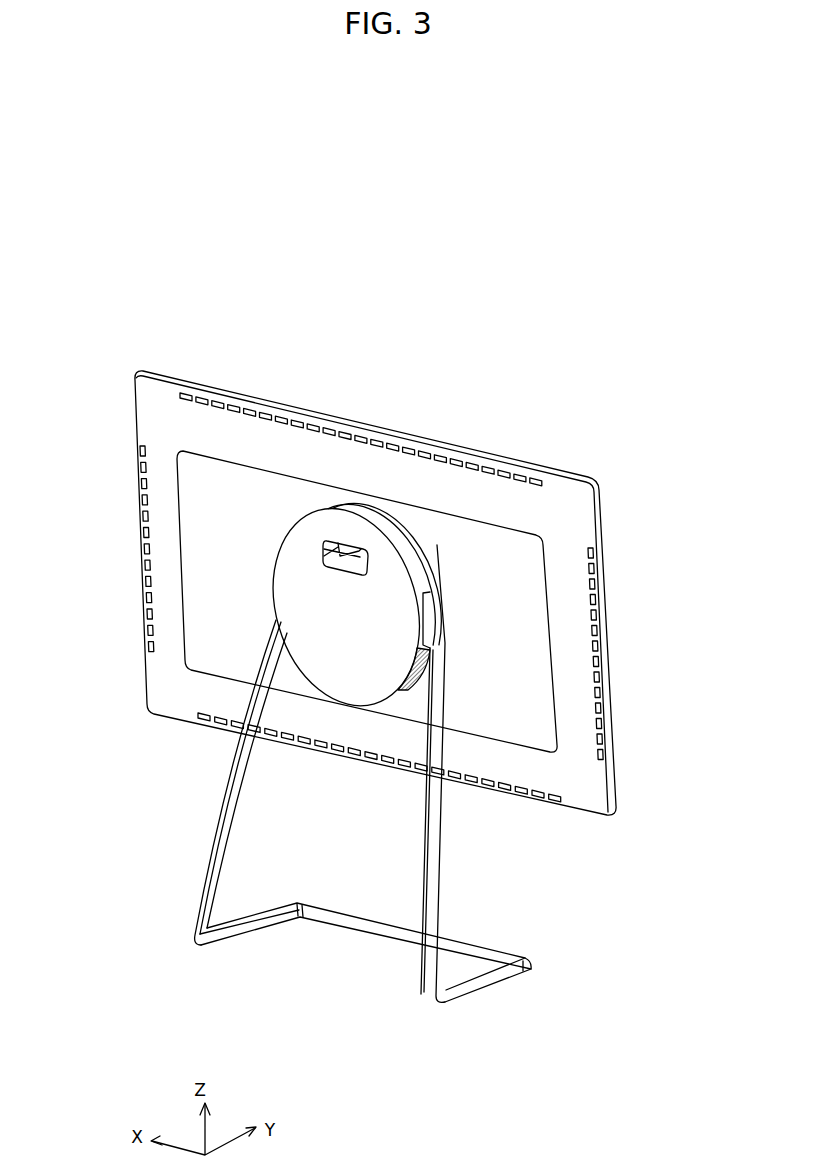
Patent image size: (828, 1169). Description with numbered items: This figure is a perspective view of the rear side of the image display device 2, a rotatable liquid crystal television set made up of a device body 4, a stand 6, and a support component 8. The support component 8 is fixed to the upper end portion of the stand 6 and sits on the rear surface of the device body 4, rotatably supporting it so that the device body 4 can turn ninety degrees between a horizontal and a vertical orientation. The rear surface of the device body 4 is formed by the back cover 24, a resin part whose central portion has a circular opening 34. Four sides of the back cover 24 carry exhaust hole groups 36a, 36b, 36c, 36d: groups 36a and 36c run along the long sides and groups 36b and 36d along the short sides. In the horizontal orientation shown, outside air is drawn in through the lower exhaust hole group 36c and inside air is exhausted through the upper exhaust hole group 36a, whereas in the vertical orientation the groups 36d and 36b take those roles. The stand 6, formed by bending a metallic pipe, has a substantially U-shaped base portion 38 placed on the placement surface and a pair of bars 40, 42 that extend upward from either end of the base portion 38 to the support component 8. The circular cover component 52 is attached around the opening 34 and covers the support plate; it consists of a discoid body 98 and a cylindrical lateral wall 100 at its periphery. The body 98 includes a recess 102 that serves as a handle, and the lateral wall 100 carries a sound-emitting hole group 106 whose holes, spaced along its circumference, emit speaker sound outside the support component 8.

The image display device 2 is at (506, 364).
The device body 4 is at (604, 518).
The stand 6 is at (208, 858).
The support component 8 is at (353, 503).
The back cover 24 is at (158, 694).
The opening 34 is at (396, 520).
The exhaust hole group 36a is at (248, 403).
The exhaust hole group 36b is at (600, 707).
The exhaust hole group 36c is at (337, 758).
The exhaust hole group 36d is at (140, 593).
The base portion 38 is at (368, 930).
The bar 40 is at (438, 887).
The bar 42 is at (223, 797).
The cover component 52 is at (590, 407).
The body 98 is at (390, 565).
The lateral wall 100 is at (427, 565).
The recess 102 is at (323, 552).
The sound-emitting hole group 106 is at (422, 687).